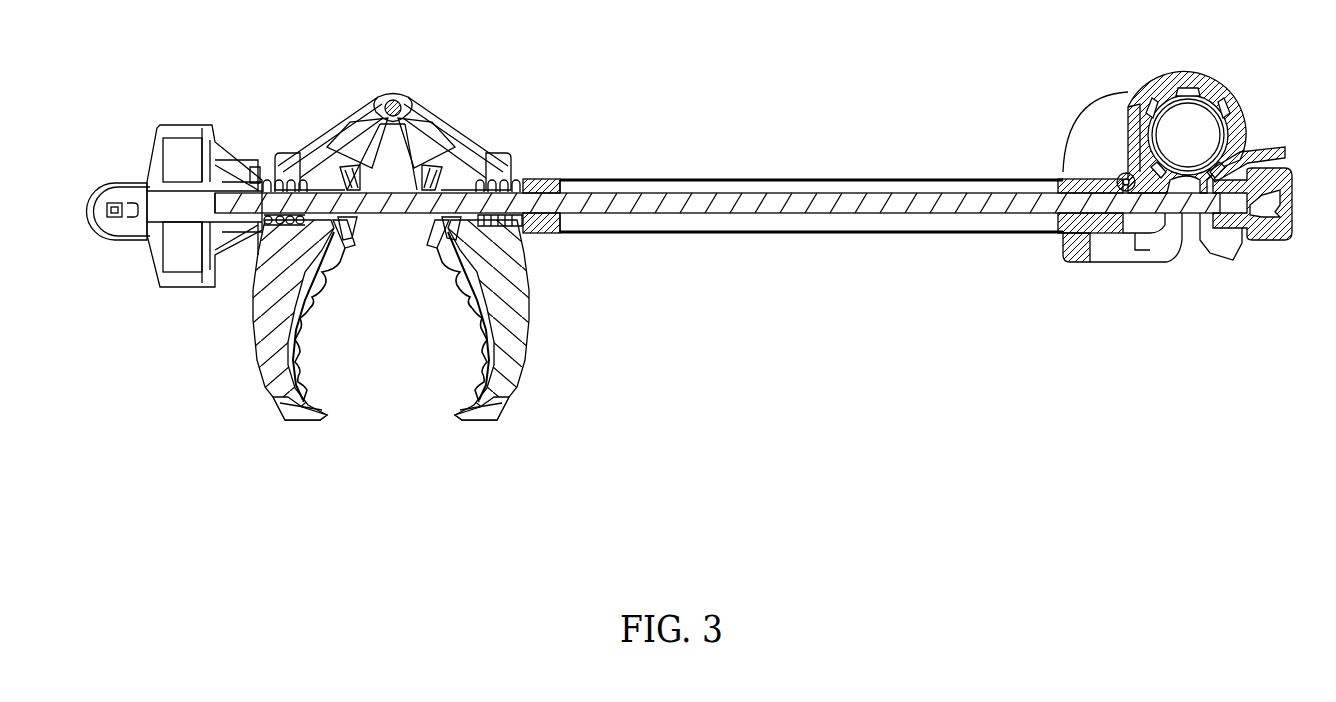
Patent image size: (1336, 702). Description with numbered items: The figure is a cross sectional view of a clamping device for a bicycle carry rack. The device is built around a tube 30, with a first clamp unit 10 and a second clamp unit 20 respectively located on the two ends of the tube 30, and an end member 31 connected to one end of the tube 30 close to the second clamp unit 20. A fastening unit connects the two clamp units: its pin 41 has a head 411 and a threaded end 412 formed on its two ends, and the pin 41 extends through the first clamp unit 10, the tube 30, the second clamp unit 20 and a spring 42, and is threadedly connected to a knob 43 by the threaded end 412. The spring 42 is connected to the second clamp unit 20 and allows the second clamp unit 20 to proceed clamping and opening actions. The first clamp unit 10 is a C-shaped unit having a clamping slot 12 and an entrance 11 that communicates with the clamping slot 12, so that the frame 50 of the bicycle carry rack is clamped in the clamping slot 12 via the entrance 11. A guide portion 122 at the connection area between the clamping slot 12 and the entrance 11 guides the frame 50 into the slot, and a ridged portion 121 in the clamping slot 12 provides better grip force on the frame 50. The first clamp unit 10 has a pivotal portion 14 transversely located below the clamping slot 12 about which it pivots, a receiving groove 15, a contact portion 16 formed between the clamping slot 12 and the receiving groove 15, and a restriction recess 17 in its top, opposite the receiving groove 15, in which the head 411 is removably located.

The first clamp unit 10 is at (1240, 170).
The entrance 11 is at (1190, 228).
The clamping slot 12 is at (1218, 112).
The pivotal portion 14 is at (1080, 262).
The receiving groove 15 is at (1103, 162).
The contact portion 16 is at (1123, 113).
The restriction recess 17 is at (1222, 240).
The second clamp unit 20 is at (417, 112).
The tube 30 is at (893, 192).
The end member 31 is at (553, 185).
The pin 41 is at (968, 206).
The spring 42 is at (508, 185).
The knob 43 is at (172, 132).
The frame 50 is at (1190, 100).
The ridged portion 121 is at (1164, 85).
The guide portion 122 is at (1143, 215).
The head 411 is at (1275, 240).
The threaded end 412 is at (240, 193).